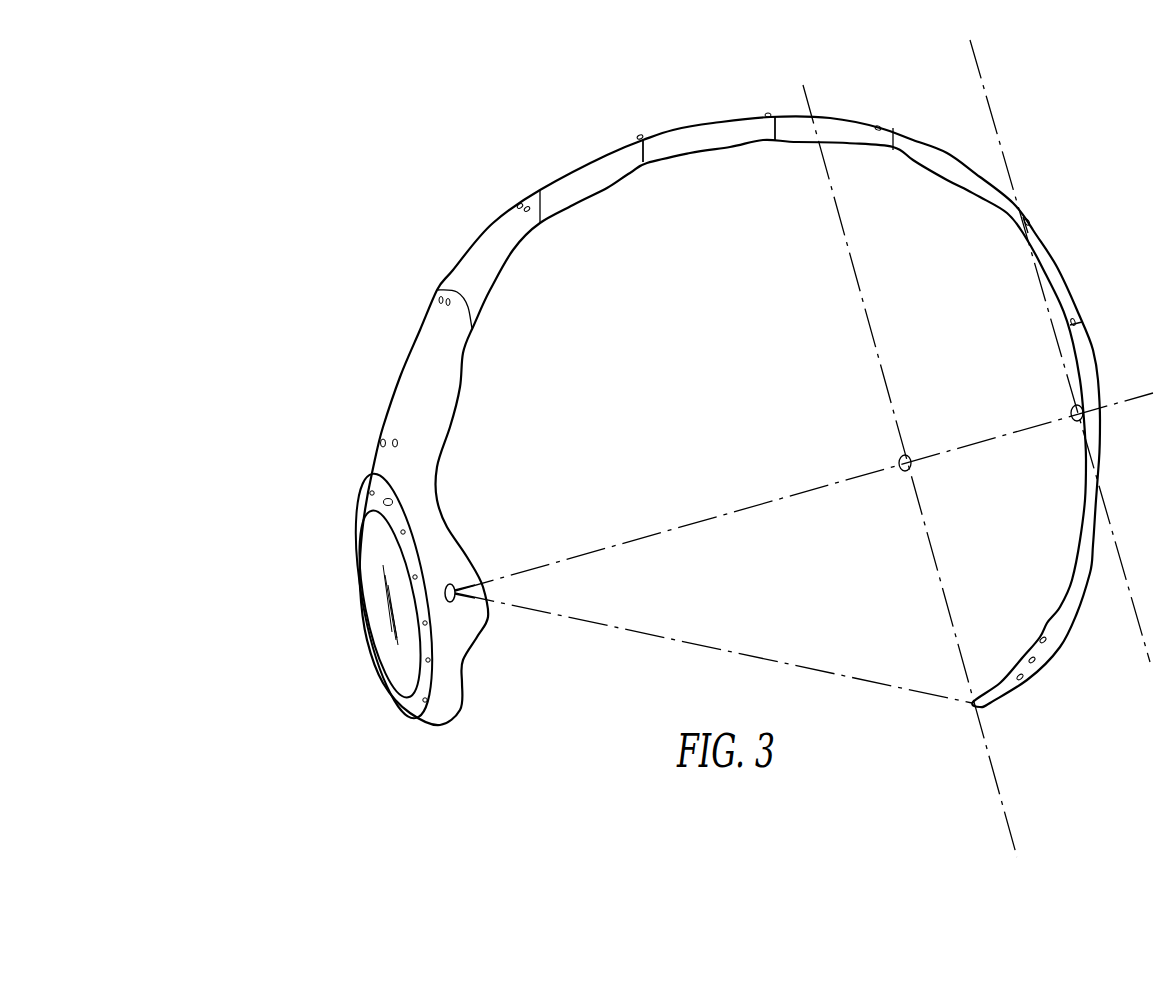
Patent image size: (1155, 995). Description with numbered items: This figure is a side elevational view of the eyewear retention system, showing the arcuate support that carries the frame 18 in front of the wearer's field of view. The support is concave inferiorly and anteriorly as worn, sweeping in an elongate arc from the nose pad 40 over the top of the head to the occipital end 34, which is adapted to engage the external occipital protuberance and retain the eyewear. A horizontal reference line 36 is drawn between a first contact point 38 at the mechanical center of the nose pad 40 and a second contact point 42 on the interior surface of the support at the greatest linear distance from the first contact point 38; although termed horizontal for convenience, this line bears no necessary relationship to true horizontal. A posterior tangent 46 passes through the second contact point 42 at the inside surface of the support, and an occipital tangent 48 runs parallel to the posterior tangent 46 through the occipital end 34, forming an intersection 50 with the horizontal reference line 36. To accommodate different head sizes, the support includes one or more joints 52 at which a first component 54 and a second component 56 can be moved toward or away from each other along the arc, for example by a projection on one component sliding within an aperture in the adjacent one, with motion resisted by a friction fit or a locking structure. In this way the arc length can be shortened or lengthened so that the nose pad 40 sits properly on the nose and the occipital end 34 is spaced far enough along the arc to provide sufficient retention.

The frame 18 is at (331, 509).
The occipital end 34 is at (983, 708).
The horizontal reference line 36 is at (665, 530).
The first contact point 38 is at (450, 585).
The nose pad 40 is at (458, 595).
The second contact point 42 is at (1073, 407).
The posterior tangent 46 is at (995, 118).
The occipital tangent 48 is at (868, 330).
The intersection 50 is at (904, 456).
The joint 52 is at (655, 158).
The first component 54 is at (555, 210).
The second component 56 is at (778, 133).